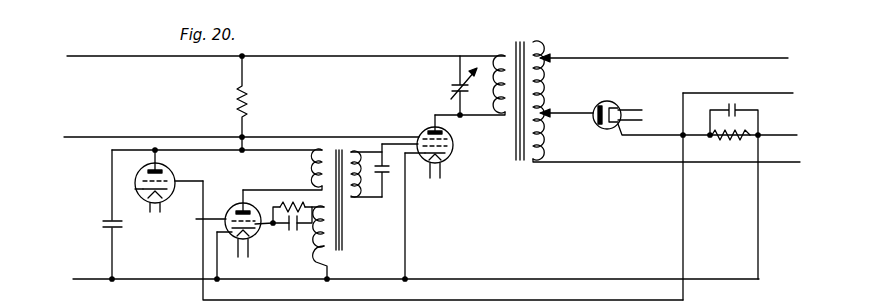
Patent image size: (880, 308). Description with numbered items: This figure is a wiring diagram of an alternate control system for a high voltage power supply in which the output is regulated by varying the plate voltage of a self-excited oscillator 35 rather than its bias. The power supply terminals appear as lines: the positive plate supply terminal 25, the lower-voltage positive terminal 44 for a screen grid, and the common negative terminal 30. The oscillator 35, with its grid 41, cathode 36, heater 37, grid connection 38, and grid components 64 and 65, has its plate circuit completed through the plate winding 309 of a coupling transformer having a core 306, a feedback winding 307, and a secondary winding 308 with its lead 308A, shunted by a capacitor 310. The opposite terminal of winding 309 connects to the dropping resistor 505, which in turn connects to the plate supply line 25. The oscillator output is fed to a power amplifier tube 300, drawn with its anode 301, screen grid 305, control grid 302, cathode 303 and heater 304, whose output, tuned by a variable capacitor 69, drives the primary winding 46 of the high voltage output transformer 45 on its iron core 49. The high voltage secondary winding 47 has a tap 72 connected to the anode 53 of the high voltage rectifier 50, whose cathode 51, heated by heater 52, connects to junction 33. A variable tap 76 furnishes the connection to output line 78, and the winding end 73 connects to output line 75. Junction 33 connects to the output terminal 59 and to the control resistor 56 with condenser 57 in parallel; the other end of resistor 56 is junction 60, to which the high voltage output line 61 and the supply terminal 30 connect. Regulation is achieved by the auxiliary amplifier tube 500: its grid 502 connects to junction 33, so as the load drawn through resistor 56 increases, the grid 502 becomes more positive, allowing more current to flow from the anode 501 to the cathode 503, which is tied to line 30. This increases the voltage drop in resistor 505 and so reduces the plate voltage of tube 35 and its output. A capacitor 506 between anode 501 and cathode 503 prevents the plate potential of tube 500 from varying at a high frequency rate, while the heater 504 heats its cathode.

The positive terminal of plate supply 25 is at (80, 47).
The positive terminal of screen grid supply 44 is at (76, 137).
The negative terminal of power supply 30 is at (83, 278).
The dropping resistor 505 is at (252, 103).
The capacitor 506 is at (106, 233).
The auxiliary amplifier tube 500 is at (141, 199).
The anode 501 is at (168, 172).
The grid 502 is at (173, 180).
The cathode 503 is at (135, 189).
The heater 504 is at (157, 205).
The self-excited oscillator 35 is at (247, 229).
The control grid 41 is at (230, 212).
The cathode 36 is at (250, 232).
The heater 37 is at (241, 237).
The grid conductor 38 is at (200, 221).
The resistor 64 is at (291, 204).
The capacitor 65 is at (295, 231).
The transformer core 306 is at (339, 146).
The plate winding 309 is at (316, 172).
The feedback winding 307 is at (343, 226).
The winding lead 308A is at (320, 262).
The secondary winding 308 is at (354, 186).
The capacitor 310 is at (390, 172).
The electron tube 300 is at (442, 147).
The anode 301 is at (423, 130).
The screen grid 305 is at (453, 138).
The control grid 302 is at (453, 146).
The cathode 303 is at (448, 157).
The heater 304 is at (445, 166).
The variable capacitor 69 is at (453, 81).
The iron core 49 is at (512, 50).
The high voltage output transformer 45 is at (518, 38).
The primary winding 46 is at (500, 96).
The high voltage secondary winding 47 is at (538, 90).
The variable tap 76 is at (542, 57).
The tap 72 is at (543, 112).
The end of high voltage secondary winding 73 is at (545, 162).
The line 78 is at (762, 58).
The line 75 is at (774, 162).
The high voltage rectifier 50 is at (607, 99).
The anode 53 is at (596, 122).
The cathode 51 is at (611, 104).
The heater 52 is at (621, 108).
The junction 33 is at (682, 135).
The output terminal 59 is at (783, 93).
The control resistor 56 is at (733, 135).
The condenser 57 is at (740, 107).
The junction 60 is at (760, 134).
The high voltage output line 61 is at (778, 135).